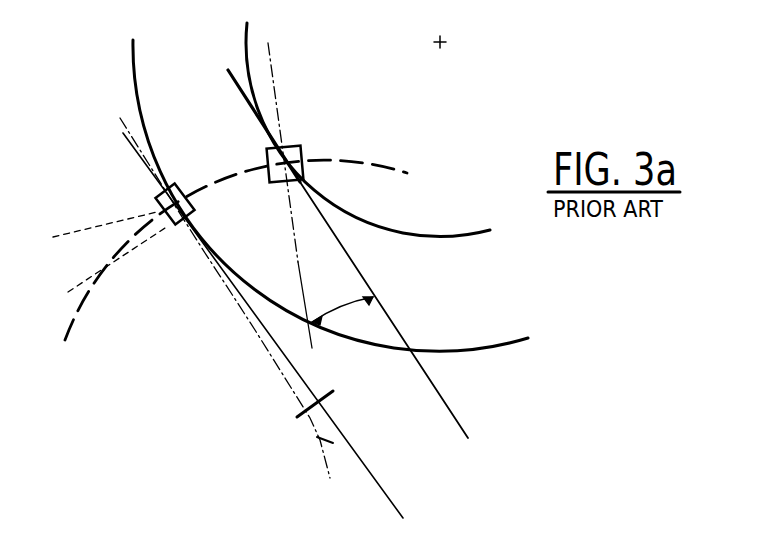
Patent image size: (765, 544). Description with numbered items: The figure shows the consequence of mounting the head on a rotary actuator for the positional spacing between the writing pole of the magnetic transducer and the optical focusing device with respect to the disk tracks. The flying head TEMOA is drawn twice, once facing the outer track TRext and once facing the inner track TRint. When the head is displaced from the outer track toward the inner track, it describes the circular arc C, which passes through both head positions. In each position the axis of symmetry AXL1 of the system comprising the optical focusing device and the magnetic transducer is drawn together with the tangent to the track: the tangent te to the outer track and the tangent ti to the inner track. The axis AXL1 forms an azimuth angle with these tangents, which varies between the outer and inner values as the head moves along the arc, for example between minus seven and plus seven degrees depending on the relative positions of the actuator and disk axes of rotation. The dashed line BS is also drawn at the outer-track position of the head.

The flying head TEMOA is at (180, 185).
The circular arc C is at (387, 170).
The inner track TRint is at (460, 237).
The outer track TRext is at (390, 353).
The axis of symmetry AXL1 is at (283, 383).
The tangent to the inner track ti is at (397, 330).
The tangent to the outer track te is at (387, 487).
The bisector line BS is at (102, 230).